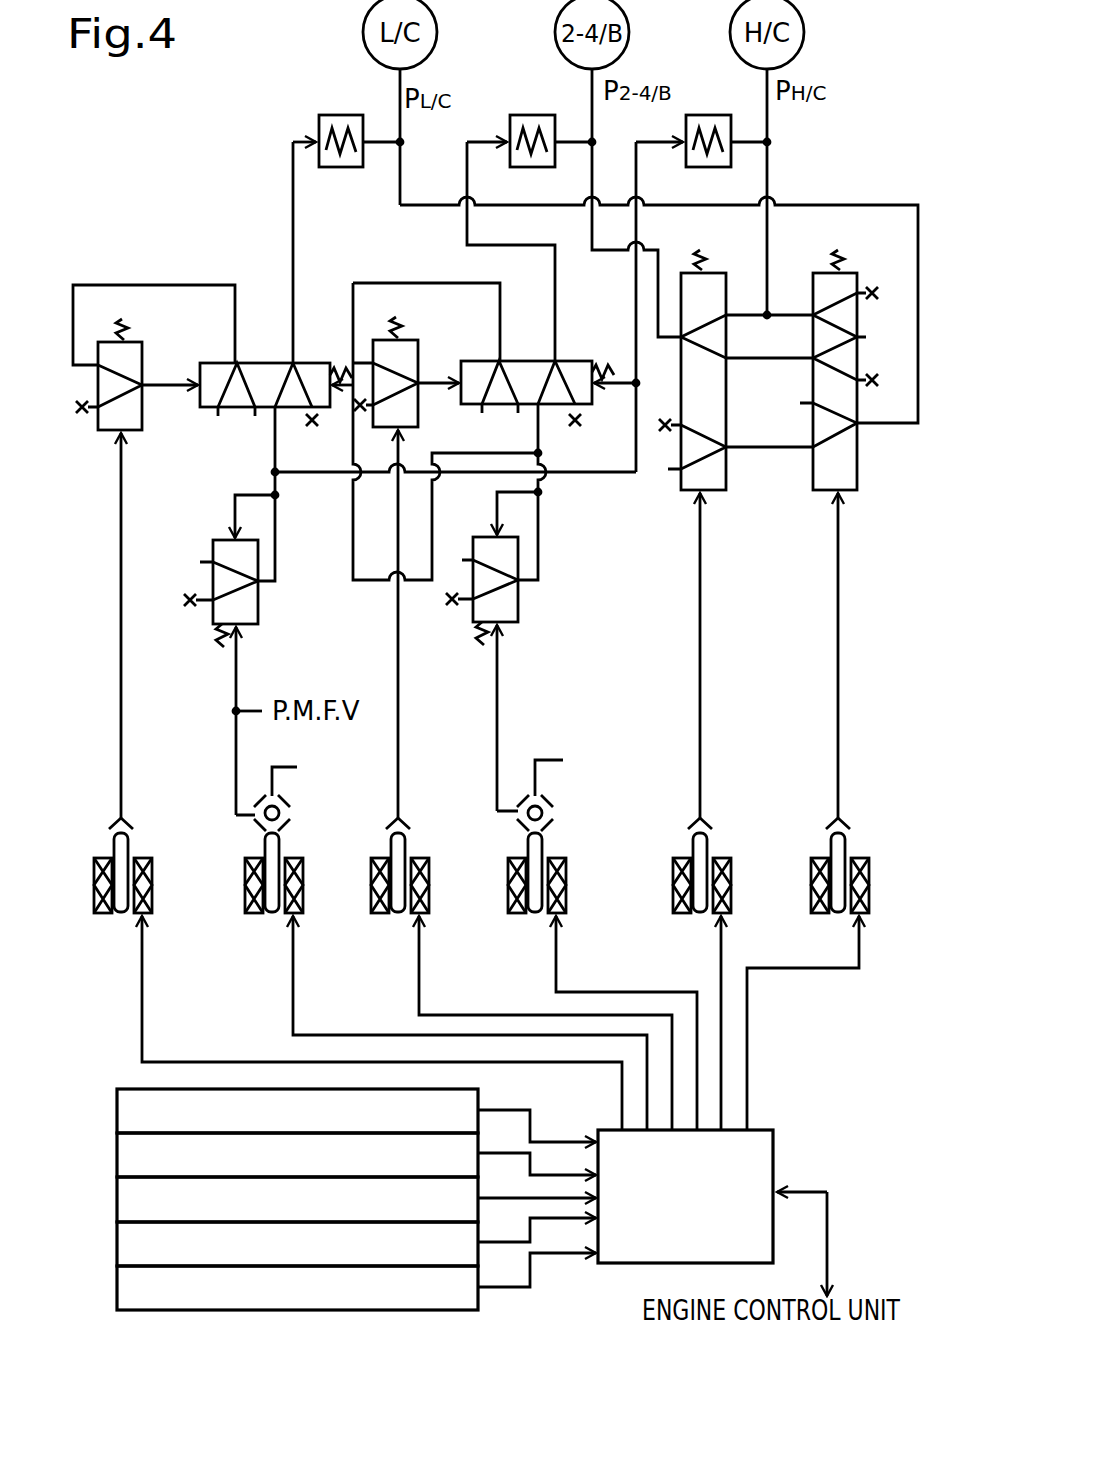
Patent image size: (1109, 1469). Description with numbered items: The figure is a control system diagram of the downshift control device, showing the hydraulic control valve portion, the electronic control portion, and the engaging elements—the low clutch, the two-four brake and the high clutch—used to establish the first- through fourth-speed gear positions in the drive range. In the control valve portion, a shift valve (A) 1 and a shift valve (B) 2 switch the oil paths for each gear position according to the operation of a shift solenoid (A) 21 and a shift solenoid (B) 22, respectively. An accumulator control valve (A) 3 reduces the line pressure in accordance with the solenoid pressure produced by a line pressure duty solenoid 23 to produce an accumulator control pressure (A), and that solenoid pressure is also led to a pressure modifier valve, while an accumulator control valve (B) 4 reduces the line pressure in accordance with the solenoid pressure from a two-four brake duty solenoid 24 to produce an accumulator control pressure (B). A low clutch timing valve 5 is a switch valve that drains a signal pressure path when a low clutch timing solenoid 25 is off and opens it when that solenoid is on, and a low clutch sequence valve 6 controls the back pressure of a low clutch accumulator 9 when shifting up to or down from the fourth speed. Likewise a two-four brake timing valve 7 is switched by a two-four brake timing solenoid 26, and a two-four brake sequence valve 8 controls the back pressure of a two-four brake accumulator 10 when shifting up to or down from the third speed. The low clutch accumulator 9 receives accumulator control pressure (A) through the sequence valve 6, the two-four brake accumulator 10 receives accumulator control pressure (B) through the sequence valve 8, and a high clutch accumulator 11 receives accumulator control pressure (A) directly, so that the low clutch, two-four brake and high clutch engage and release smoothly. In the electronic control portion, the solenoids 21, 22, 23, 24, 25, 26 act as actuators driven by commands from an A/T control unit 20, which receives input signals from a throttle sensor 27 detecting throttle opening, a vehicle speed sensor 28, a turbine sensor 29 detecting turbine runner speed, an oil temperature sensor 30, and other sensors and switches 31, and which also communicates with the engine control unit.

The shift valve (A) 1 is at (716, 273).
The shift valve (B) 2 is at (852, 273).
The accumulator control valve (A) 3 is at (259, 605).
The accumulator control valve (B) 4 is at (519, 601).
The low clutch timing valve 5 is at (145, 356).
The low clutch sequence valve 6 is at (312, 362).
The 2-4 brake timing valve 7 is at (420, 356).
The 2-4 brake sequence valve 8 is at (572, 361).
The low clutch accumulator 9 is at (340, 115).
The 2-4 brake accumulator 10 is at (533, 115).
The high clutch accumulator 11 is at (712, 115).
The A/T control unit 20 is at (775, 1160).
The shift solenoid (A) 21 is at (726, 858).
The shift solenoid (B) 22 is at (864, 858).
The line pressure duty solenoid 23 is at (298, 858).
The 2-4/B duty solenoid 24 is at (575, 858).
The low clutch timing solenoid 25 is at (148, 858).
The 2-4 brake timing solenoid 26 is at (425, 858).
The throttle sensor 27 is at (117, 1111).
The vehicle speed sensor 28 is at (117, 1155).
The turbine sensor 29 is at (117, 1199).
The oil temperature sensor 30 is at (117, 1243).
The other sensors and switches 31 is at (117, 1287).